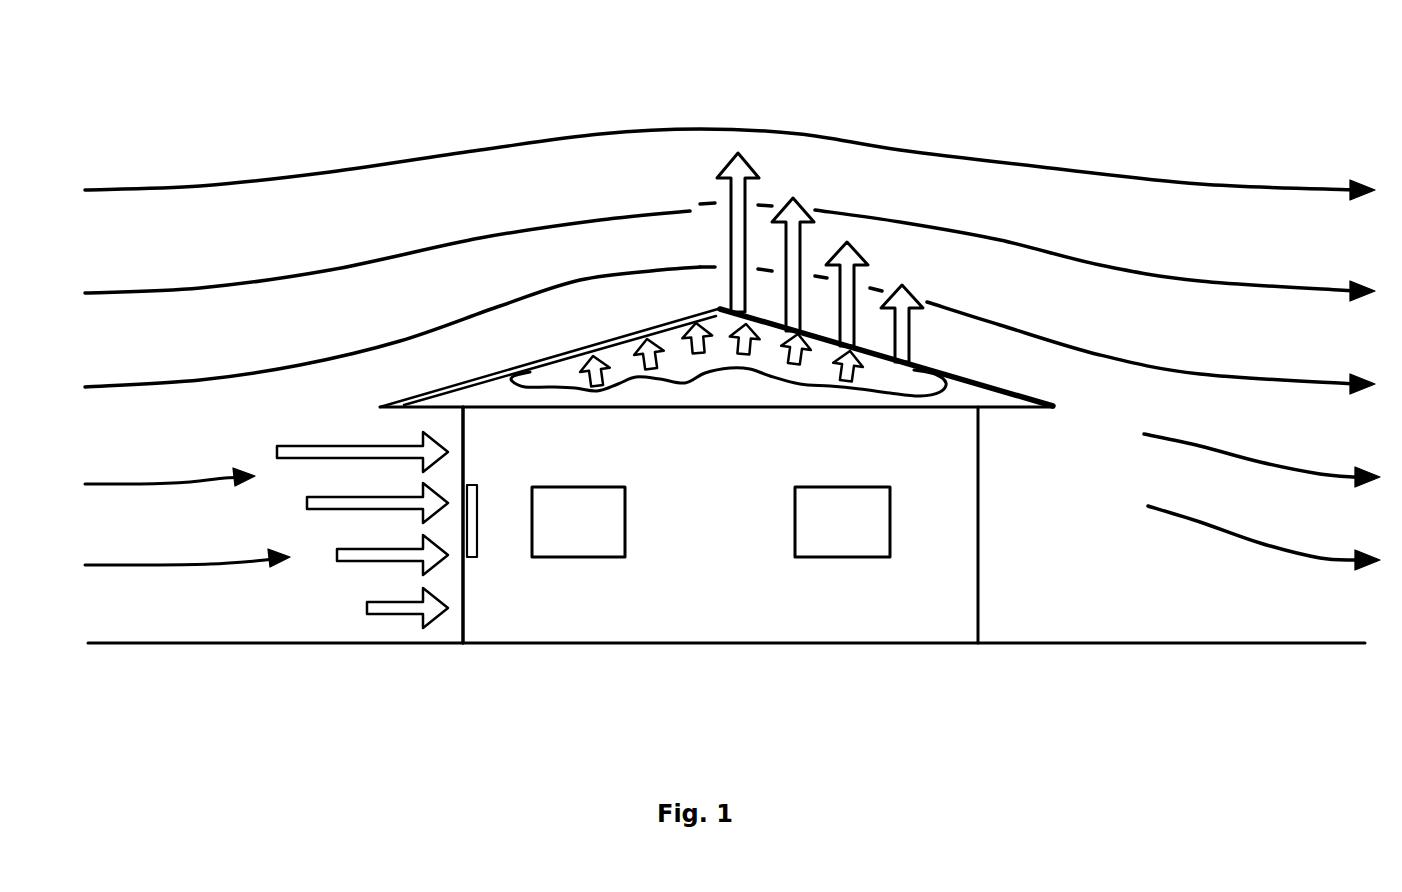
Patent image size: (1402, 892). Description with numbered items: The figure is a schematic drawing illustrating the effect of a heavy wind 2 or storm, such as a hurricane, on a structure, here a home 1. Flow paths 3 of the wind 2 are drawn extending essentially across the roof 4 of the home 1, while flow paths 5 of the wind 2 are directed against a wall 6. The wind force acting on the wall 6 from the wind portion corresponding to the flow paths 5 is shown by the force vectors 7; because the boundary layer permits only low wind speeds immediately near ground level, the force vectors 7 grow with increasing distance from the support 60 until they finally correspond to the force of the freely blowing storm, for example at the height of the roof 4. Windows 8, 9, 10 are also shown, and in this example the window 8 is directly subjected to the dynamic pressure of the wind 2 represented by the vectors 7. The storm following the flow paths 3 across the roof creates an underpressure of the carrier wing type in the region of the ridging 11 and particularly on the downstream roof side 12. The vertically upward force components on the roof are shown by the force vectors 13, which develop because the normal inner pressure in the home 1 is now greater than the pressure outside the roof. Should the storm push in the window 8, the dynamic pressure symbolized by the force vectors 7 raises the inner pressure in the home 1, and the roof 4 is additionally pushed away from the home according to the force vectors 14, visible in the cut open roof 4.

The home 1 is at (718, 565).
The heavy wind 2 is at (920, 122).
The flow paths 3 is at (400, 338).
The roof 4 is at (736, 400).
The flow paths 5 is at (156, 569).
The wall 6 is at (462, 617).
The force vectors 7 is at (376, 617).
The window 8 is at (475, 528).
The window 9 is at (573, 530).
The window 10 is at (840, 528).
The ridging 11 is at (708, 302).
The roof side 12 is at (948, 372).
The force vectors 13 is at (900, 287).
The force vectors 14 is at (585, 357).
The support 60 is at (243, 645).